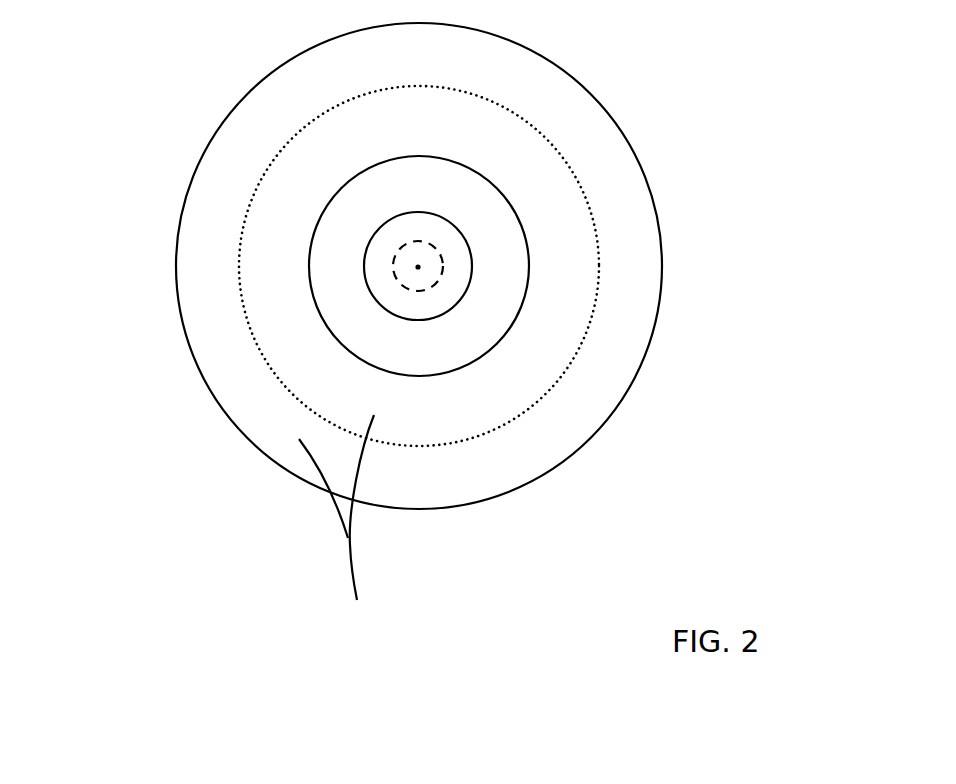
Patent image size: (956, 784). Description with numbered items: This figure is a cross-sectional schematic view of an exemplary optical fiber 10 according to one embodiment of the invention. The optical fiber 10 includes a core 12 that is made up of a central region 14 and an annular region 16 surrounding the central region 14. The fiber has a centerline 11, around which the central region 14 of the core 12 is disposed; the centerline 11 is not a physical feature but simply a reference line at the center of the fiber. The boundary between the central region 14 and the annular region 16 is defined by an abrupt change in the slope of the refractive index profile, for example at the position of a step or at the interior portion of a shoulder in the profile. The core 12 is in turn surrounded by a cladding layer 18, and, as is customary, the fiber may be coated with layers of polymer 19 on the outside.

The optical fiber 10 is at (172, 80).
The centerline 11 is at (418, 267).
The core 12 is at (457, 222).
The central region 14 is at (403, 250).
The annular region 16 is at (455, 277).
The cladding layer 18 is at (465, 340).
The layers of polymer 19 is at (336, 534).